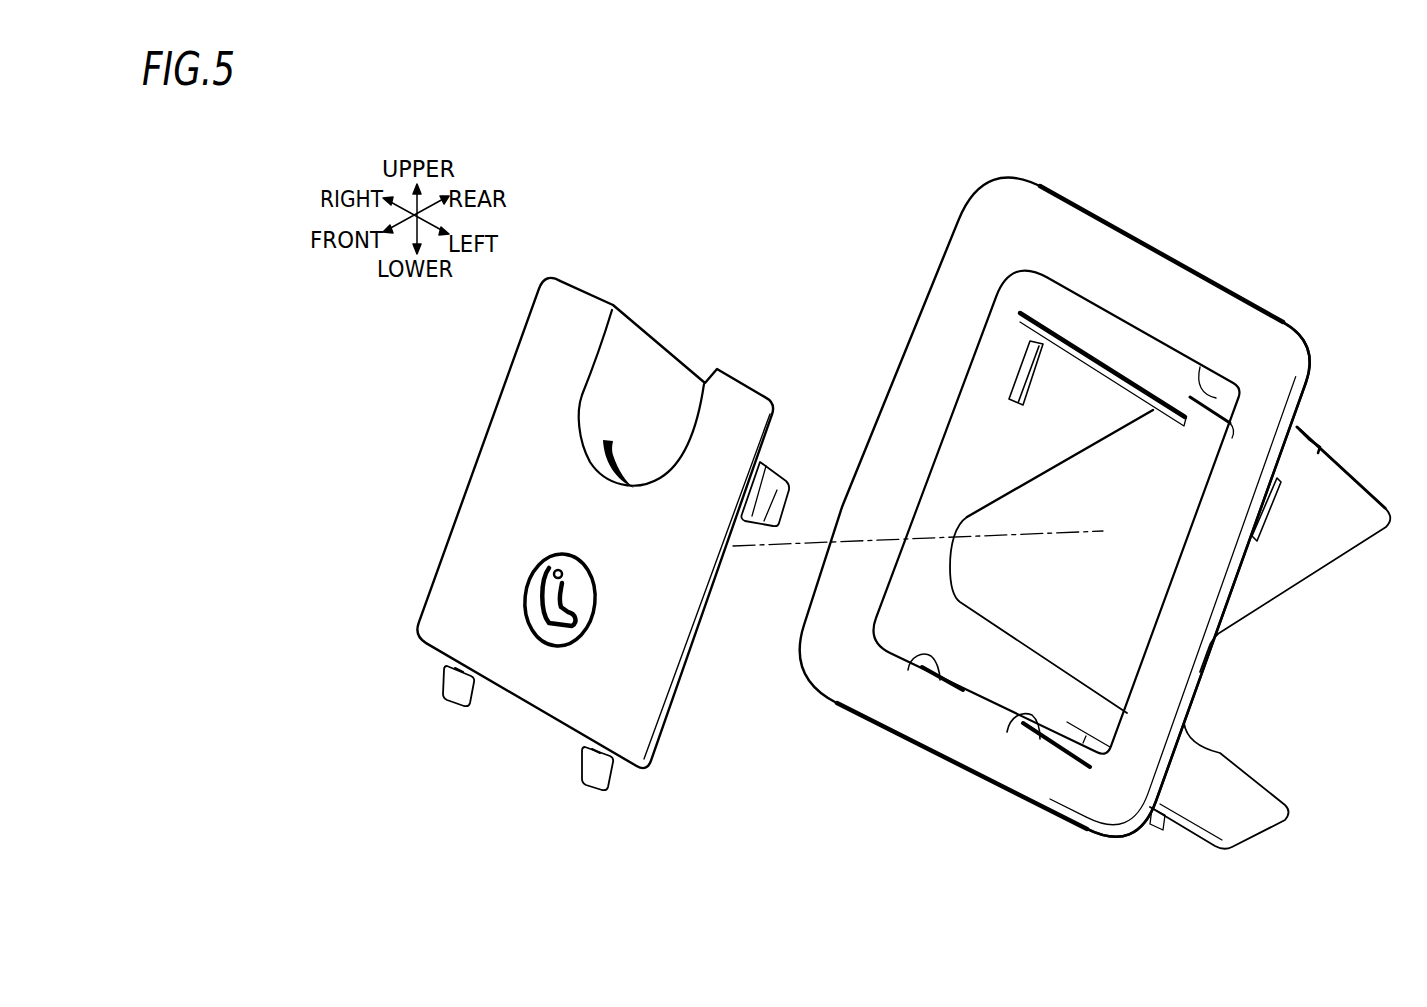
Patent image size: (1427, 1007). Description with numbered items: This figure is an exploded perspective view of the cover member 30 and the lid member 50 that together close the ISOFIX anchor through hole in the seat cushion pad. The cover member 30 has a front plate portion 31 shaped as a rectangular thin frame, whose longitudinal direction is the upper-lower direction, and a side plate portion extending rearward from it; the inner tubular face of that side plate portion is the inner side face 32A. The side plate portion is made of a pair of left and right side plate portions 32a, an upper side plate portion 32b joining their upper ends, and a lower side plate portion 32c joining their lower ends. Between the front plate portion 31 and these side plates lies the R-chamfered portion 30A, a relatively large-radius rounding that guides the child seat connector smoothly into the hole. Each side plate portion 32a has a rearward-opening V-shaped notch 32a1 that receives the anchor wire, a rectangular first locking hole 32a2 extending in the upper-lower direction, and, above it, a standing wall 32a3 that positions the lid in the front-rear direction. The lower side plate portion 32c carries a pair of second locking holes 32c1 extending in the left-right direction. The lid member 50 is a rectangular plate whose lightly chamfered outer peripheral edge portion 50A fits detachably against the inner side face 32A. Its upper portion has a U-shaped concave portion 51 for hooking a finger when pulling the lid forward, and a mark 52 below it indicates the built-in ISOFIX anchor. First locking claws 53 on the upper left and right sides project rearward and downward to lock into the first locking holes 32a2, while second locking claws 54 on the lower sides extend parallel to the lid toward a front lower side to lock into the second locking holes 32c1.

The cover member 30 is at (968, 206).
The R-chamfered portion 30A is at (1155, 337).
The front plate portion 31 is at (1041, 228).
The inner side face 32A is at (1043, 423).
The left and right side plate portions 32a is at (1003, 430).
The V-shaped notch 32a1 is at (1100, 438).
The first locking hole 32a2 is at (1017, 367).
The standing wall 32a3 is at (1083, 350).
The upper side plate portion 32b is at (1216, 397).
The lower side plate portion 32c is at (1067, 757).
The second locking hole 32c1 is at (913, 663).
The lid member 50 is at (476, 441).
The outer peripheral edge portion 50A is at (507, 377).
The concave portion 51 is at (645, 387).
The mark 52 is at (523, 587).
The first locking claw 53 is at (777, 473).
The second locking claw 54 is at (453, 708).